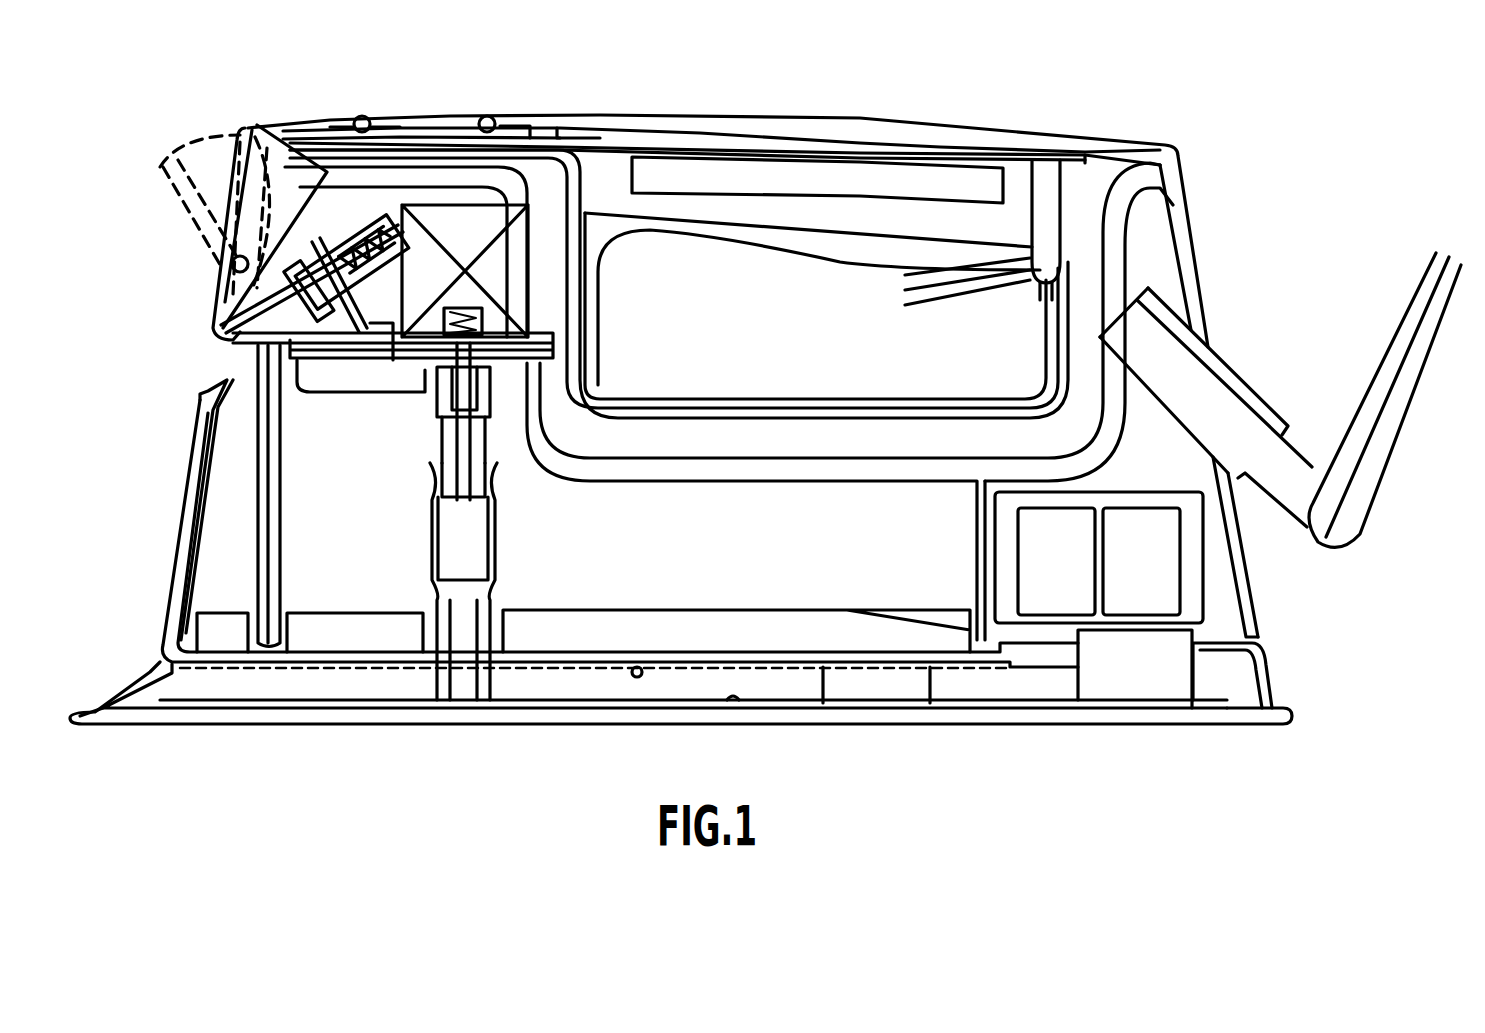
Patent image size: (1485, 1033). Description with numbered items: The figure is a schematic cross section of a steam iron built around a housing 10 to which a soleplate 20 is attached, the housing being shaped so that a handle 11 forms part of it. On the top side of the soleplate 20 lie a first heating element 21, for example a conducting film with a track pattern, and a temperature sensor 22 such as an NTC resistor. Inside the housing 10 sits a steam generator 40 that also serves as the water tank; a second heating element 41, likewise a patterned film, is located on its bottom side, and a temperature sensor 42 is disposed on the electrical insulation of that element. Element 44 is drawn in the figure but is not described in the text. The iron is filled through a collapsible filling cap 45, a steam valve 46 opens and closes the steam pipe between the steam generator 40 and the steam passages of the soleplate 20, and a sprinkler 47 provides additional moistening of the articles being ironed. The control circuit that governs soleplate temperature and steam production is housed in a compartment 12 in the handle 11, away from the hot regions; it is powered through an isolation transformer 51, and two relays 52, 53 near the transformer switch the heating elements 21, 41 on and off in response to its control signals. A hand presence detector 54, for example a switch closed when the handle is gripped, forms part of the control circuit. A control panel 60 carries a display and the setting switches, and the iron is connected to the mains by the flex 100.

The housing 10 is at (1183, 117).
The handle 11 is at (830, 215).
The compartment 12 is at (743, 175).
The soleplate 20 is at (523, 717).
The first heating element 21 is at (913, 707).
The temperature sensor 22 is at (722, 705).
The steam generator 40 is at (587, 583).
The second heating element 41 is at (823, 703).
The temperature sensor 42 is at (640, 677).
The heating element 44 is at (722, 625).
The filling cap 45 is at (190, 140).
The steam valve 46 is at (440, 440).
The sprinkler 47 is at (223, 342).
The isolation transformer 51 is at (1203, 562).
The relay 52 is at (1180, 590).
The relay 53 is at (1073, 530).
The hand presence detector 54 is at (1043, 295).
The control panel 60 is at (424, 128).
The flex 100 is at (1422, 290).